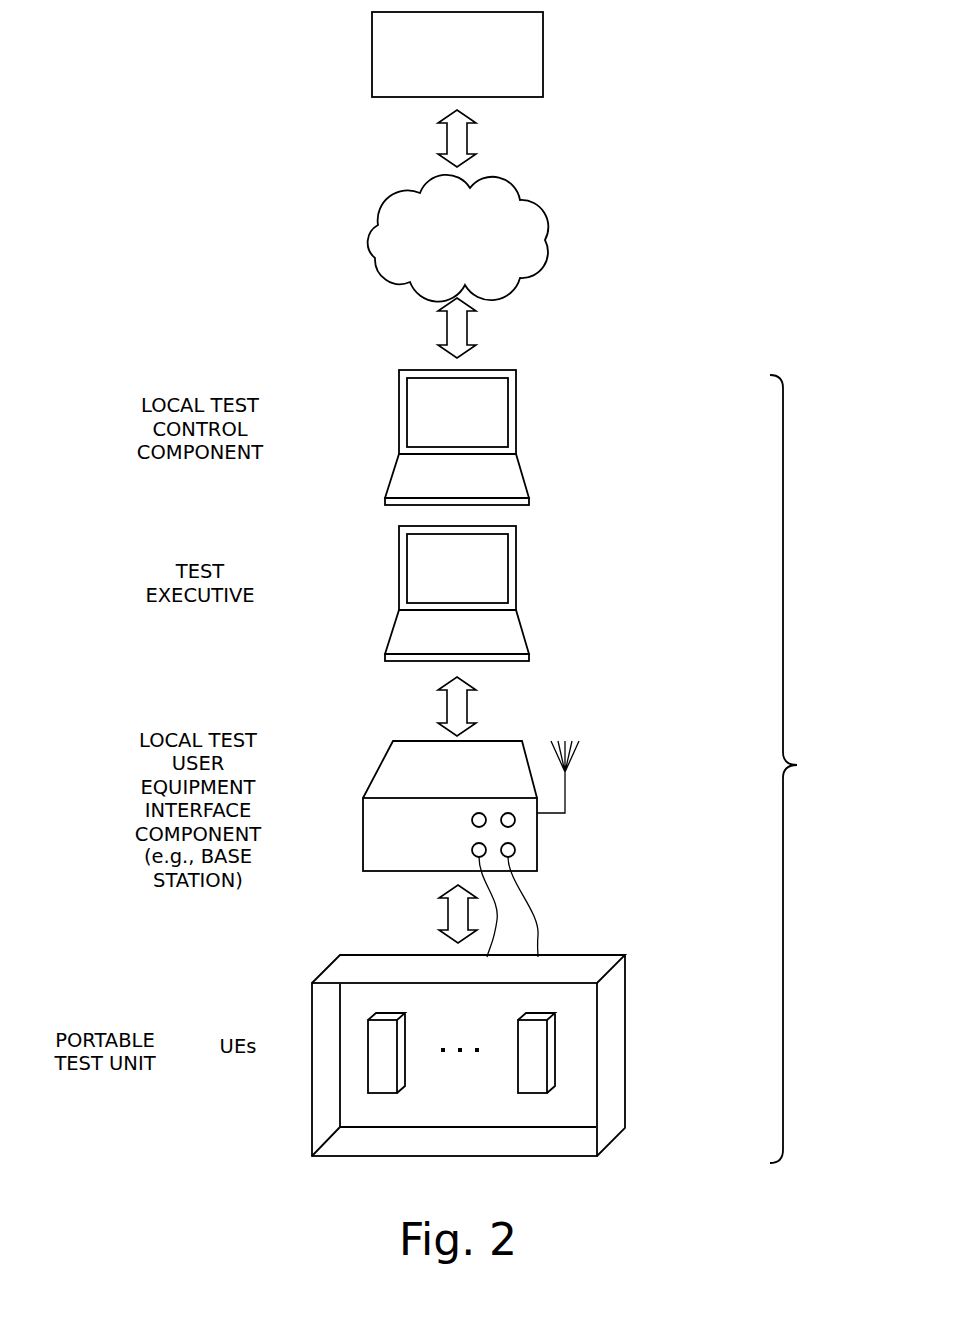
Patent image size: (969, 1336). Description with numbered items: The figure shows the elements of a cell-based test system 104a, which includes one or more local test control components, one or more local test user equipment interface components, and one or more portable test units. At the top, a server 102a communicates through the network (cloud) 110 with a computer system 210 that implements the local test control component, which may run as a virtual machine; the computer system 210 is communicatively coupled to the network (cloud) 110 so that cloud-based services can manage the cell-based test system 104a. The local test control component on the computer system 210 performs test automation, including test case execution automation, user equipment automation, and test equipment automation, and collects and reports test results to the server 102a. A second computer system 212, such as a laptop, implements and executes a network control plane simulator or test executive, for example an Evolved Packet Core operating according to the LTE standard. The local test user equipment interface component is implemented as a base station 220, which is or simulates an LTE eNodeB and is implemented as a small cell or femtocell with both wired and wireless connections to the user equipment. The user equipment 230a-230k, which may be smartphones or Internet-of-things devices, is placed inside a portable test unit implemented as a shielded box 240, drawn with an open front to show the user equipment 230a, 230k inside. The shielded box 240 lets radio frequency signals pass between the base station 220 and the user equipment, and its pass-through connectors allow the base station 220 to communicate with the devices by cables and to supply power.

The server 102a is at (437, 51).
The network (cloud) 110 is at (442, 219).
The computer system 210 is at (442, 484).
The second computer system 212 is at (442, 641).
The base station 220 is at (443, 780).
The shielded box 240 is at (445, 1015).
The user equipment 230a is at (382, 1050).
The user equipment 230k is at (542, 1050).
The cell-based test system 104a is at (823, 773).